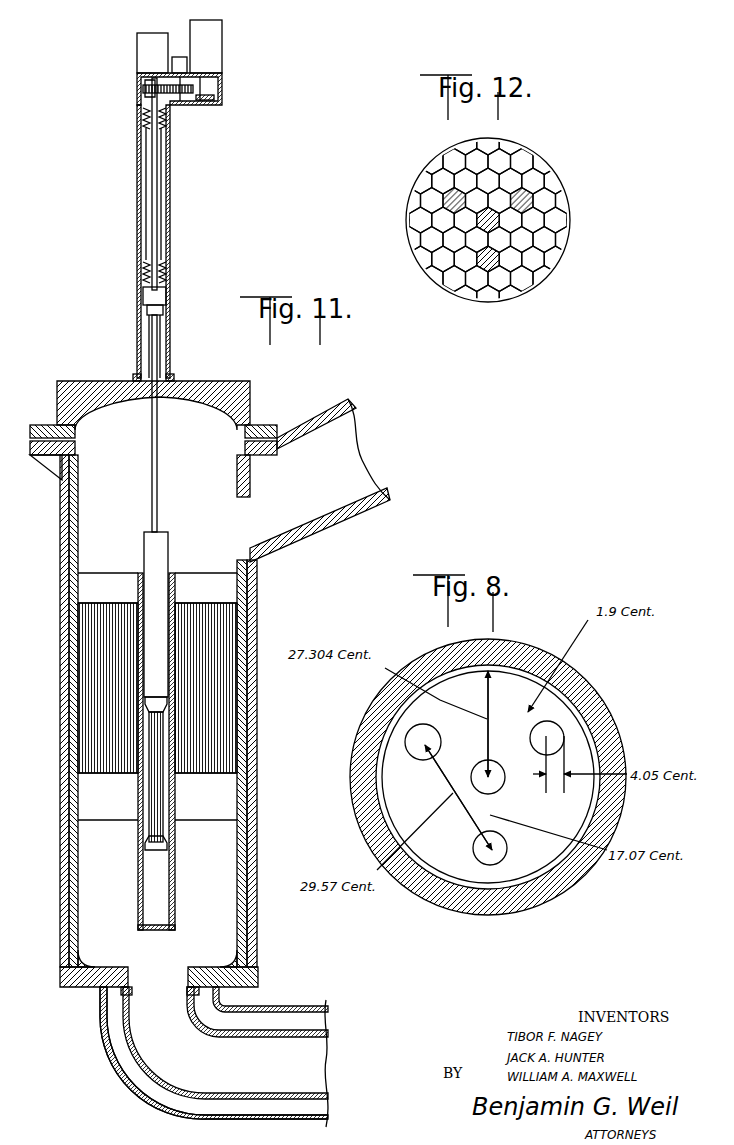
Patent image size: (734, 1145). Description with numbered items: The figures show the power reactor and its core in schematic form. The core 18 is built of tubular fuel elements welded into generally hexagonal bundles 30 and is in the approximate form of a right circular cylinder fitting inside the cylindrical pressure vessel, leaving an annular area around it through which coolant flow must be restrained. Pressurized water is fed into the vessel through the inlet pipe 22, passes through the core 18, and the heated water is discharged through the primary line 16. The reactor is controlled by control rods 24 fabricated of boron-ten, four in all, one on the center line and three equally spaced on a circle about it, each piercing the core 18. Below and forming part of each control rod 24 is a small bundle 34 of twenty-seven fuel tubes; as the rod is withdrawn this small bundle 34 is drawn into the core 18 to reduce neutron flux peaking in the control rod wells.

In FIG. 11, the primary line 16 is at (328, 497).
In FIG. 11, the core 18 is at (100, 685).
In FIG. 11, the inlet pipe 22 is at (283, 1040).
In FIG. 11, the control rod 24 is at (152, 642).
In FIG. 12, the control rod 24 is at (533, 190).
In FIG. 12, the bundle 30 is at (486, 156).
In FIG. 11, the small bundle 34 is at (155, 797).